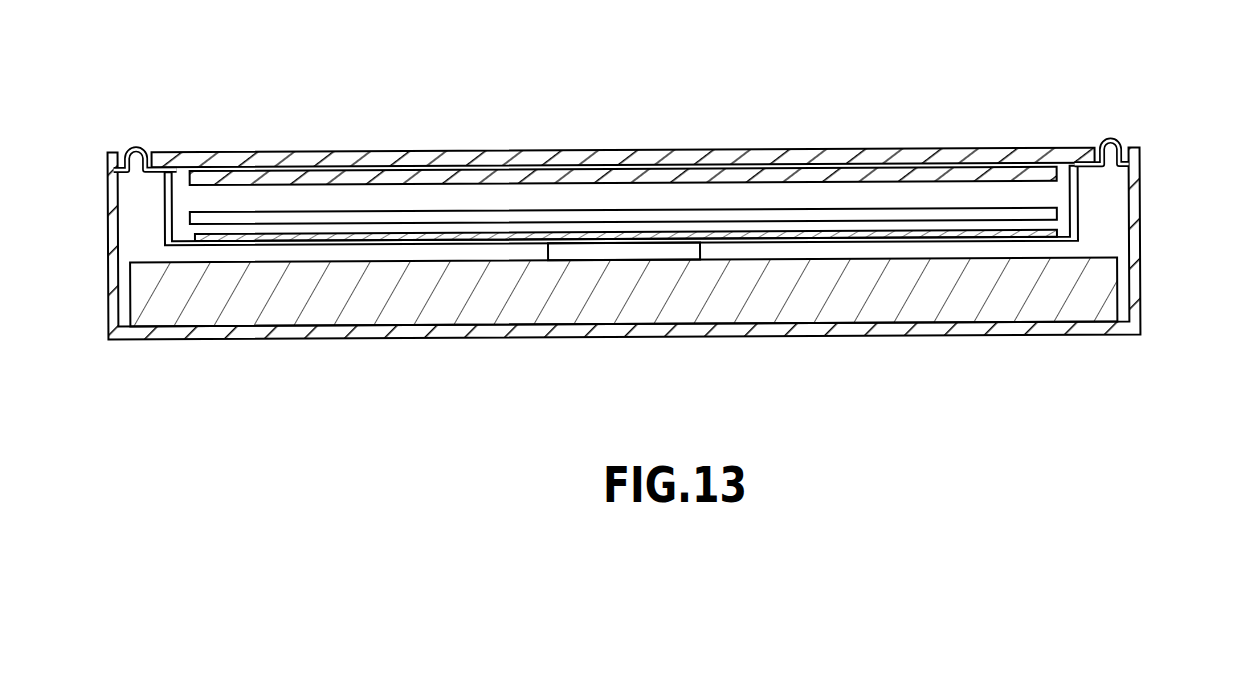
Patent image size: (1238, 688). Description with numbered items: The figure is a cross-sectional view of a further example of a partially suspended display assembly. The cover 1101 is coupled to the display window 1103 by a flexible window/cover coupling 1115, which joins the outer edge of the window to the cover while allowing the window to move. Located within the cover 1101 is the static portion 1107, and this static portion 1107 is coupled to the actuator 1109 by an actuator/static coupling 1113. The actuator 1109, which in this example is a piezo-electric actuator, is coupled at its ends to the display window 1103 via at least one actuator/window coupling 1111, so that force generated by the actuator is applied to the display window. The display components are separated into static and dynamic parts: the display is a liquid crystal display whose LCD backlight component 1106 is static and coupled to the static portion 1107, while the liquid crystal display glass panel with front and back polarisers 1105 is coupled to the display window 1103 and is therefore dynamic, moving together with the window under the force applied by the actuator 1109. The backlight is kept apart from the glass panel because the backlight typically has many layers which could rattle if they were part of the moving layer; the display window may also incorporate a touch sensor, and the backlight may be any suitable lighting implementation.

The cover 1101 is at (403, 332).
The display window 1103 is at (760, 158).
The liquid crystal display glass panel with front and back polarisers 1105 is at (635, 177).
The LCD backlight component 1106 is at (257, 188).
The static portion 1107 is at (1030, 332).
The actuator 1109 is at (219, 262).
The actuator/window coupling 1111 is at (1110, 208).
The actuator/static coupling 1113 is at (598, 252).
The flexible window/cover coupling 1115 is at (1131, 128).